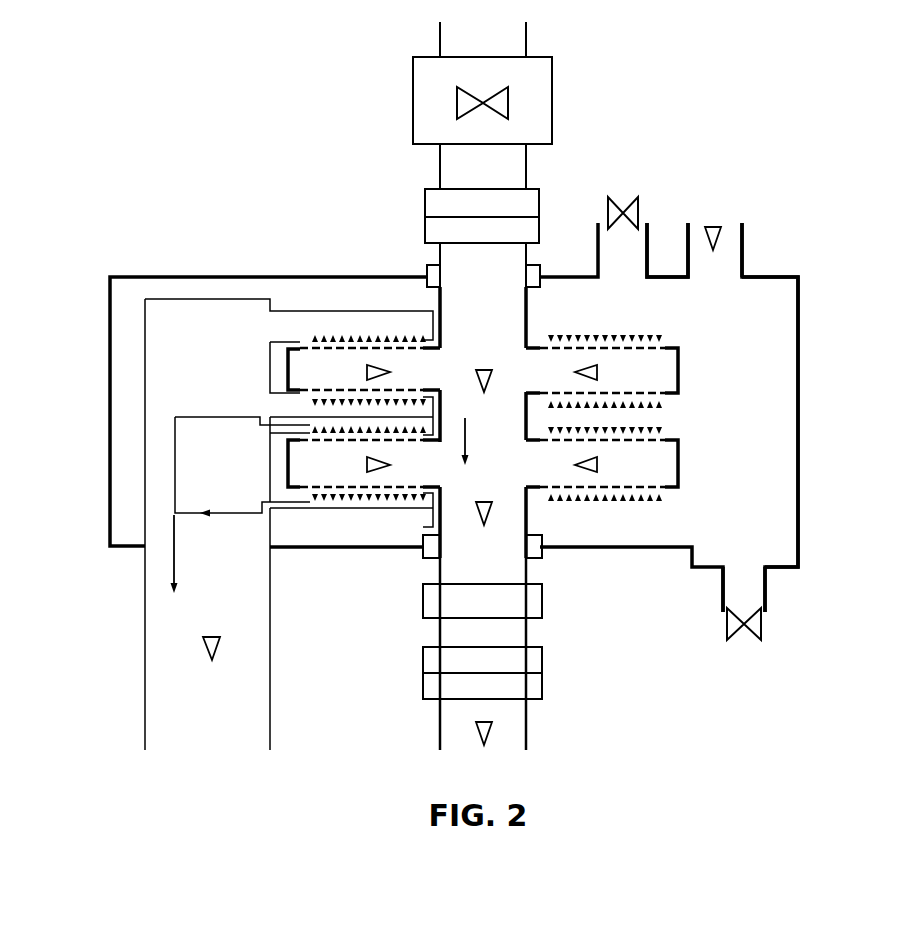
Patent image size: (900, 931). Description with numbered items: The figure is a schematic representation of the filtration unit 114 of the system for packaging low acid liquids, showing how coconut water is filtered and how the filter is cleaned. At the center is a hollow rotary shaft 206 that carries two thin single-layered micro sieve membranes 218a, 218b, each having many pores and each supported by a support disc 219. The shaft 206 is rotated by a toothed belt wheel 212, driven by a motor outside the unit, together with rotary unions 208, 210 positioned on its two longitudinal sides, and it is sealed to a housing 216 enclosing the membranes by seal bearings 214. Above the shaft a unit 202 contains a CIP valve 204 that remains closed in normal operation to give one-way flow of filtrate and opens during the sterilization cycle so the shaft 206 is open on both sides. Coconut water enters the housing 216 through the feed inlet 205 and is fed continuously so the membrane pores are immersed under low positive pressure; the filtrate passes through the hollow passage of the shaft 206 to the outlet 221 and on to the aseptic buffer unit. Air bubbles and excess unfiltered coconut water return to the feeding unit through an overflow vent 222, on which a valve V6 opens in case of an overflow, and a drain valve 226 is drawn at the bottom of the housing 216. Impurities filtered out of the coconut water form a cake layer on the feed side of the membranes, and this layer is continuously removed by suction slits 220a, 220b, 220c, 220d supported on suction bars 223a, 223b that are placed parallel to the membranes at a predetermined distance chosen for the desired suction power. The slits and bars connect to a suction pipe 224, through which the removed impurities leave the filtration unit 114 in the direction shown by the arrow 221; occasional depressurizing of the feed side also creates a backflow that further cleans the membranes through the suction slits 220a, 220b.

The filtration unit 114 is at (163, 87).
The inlet valve assembly 202 is at (552, 72).
The CIP valve 204 is at (510, 103).
The hollow rotary shaft 206 is at (526, 173).
The rotary union 208 is at (425, 230).
The seal bearings 214 is at (426, 266).
The valve V6 is at (628, 200).
The overflow vent 222 is at (632, 257).
The feed inlet 205 is at (720, 217).
The housing 216 is at (798, 422).
The drain valve 226 is at (768, 590).
The micro sieve membrane 218a is at (660, 343).
The micro sieve membrane 218b is at (660, 437).
The support disc 219 is at (683, 368).
The suction slit 220a is at (310, 338).
The suction slit 220b is at (310, 402).
The suction slit 220c is at (310, 432).
The suction slit 220d is at (310, 499).
The suction bar 223a is at (288, 370).
The suction bar 223b is at (288, 462).
The suction pipe 224 is at (145, 673).
The outlet 221 is at (174, 565).
The toothed belt wheel 212 is at (542, 600).
The rotary union 210 is at (423, 686).